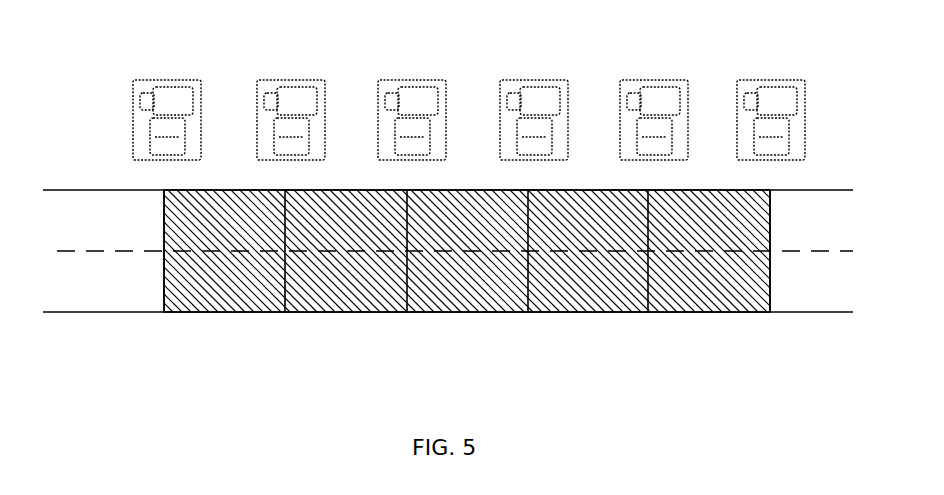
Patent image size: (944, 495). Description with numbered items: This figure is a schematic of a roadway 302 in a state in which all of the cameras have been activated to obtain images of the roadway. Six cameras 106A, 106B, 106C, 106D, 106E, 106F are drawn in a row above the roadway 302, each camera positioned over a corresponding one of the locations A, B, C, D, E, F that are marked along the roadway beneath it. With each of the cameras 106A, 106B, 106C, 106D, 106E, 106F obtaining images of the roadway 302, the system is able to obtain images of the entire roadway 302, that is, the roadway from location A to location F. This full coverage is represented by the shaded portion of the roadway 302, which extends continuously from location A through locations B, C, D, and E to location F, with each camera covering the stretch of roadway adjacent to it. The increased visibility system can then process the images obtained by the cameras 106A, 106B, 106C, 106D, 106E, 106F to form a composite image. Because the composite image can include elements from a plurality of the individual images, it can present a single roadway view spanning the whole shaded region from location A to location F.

The camera 106A is at (774, 78).
The camera 106B is at (656, 78).
The camera 106C is at (536, 78).
The camera 106D is at (418, 78).
The camera 106E is at (291, 78).
The camera 106F is at (166, 78).
The roadway 302 is at (452, 314).
The location A is at (771, 314).
The location B is at (649, 314).
The location C is at (529, 314).
The location D is at (408, 314).
The location E is at (286, 314).
The location F is at (165, 314).